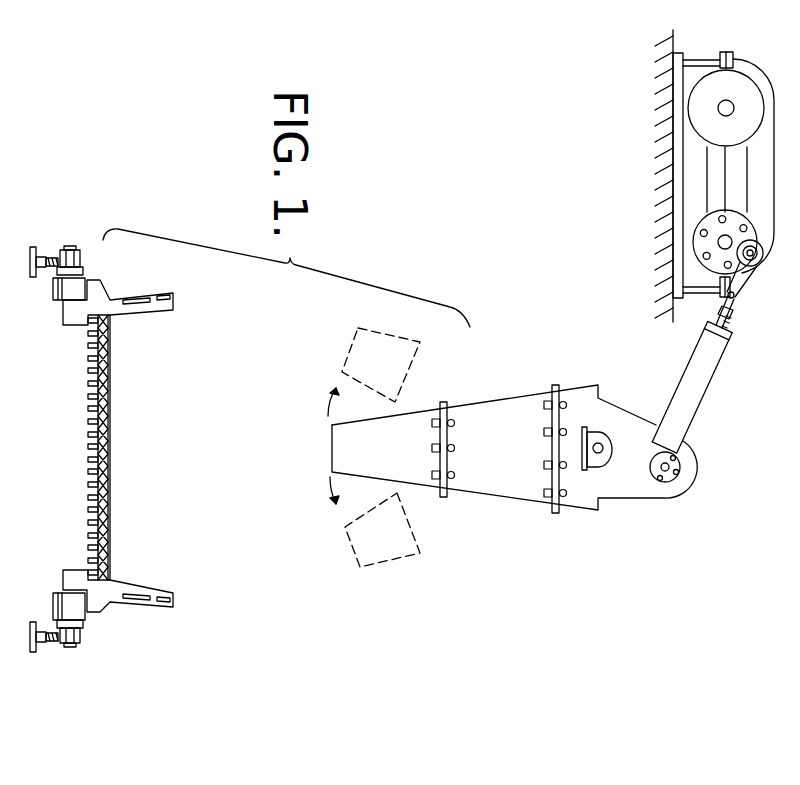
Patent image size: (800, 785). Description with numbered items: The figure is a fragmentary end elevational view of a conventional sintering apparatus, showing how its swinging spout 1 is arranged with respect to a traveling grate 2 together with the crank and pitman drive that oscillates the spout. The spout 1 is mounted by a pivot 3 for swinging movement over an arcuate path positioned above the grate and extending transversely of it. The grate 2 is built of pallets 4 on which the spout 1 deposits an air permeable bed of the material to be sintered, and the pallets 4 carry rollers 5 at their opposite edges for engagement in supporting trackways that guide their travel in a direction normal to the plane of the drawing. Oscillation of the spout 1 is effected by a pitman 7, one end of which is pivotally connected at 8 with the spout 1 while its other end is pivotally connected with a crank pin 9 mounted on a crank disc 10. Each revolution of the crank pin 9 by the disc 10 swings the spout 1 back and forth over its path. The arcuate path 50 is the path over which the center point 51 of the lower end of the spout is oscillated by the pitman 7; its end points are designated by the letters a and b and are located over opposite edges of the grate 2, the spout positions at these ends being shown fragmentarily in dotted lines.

The swinging spout 1 is at (482, 497).
The traveling grate 2 is at (112, 353).
The pivot 3 is at (603, 455).
The pallets 4 is at (108, 488).
The rollers 5 is at (73, 262).
The pitman 7 is at (703, 388).
The pivot connection 8 is at (676, 480).
The crank pin 9 is at (756, 262).
The crank disc 10 is at (741, 218).
The arcuate path 50 is at (327, 413).
The center point of the lower end of the spout 51 is at (331, 450).
The end point of path a is at (350, 345).
The end point of path b is at (352, 543).